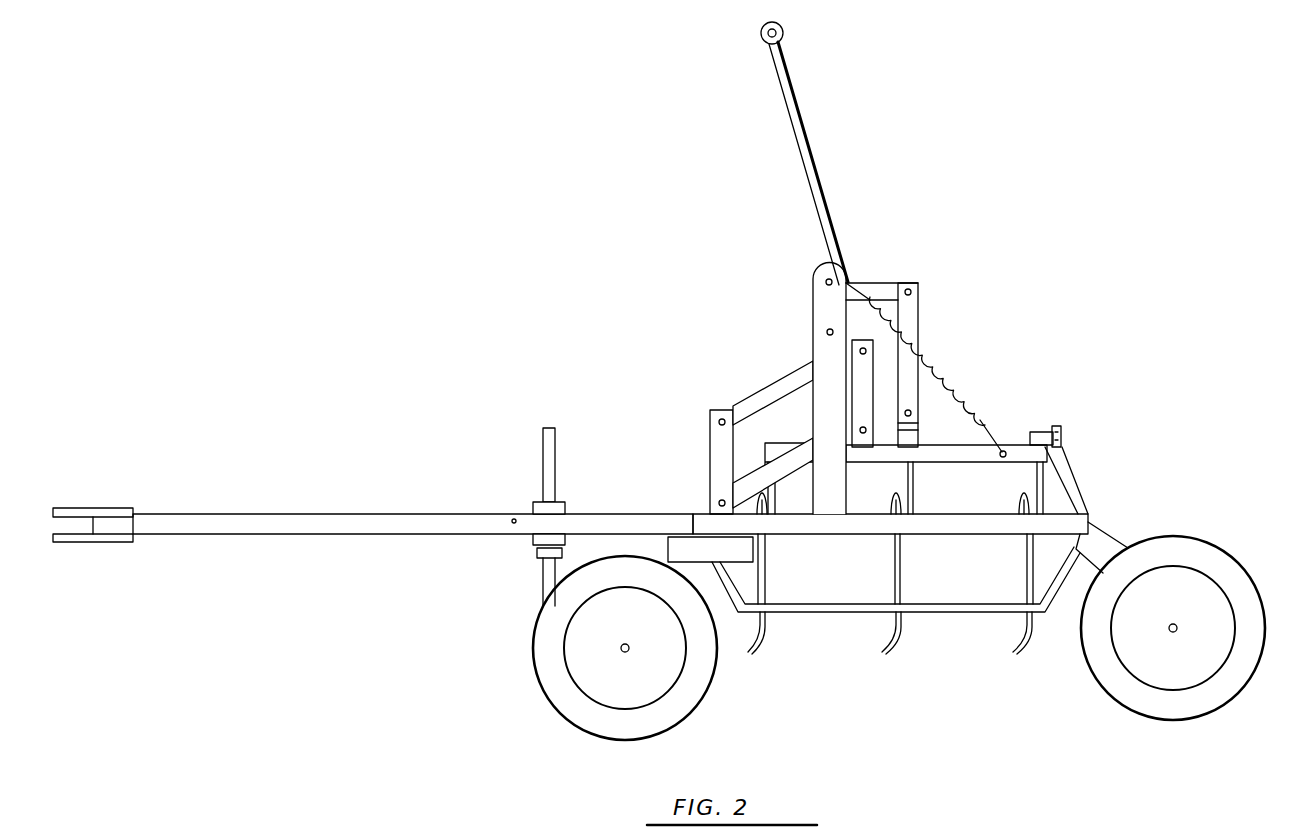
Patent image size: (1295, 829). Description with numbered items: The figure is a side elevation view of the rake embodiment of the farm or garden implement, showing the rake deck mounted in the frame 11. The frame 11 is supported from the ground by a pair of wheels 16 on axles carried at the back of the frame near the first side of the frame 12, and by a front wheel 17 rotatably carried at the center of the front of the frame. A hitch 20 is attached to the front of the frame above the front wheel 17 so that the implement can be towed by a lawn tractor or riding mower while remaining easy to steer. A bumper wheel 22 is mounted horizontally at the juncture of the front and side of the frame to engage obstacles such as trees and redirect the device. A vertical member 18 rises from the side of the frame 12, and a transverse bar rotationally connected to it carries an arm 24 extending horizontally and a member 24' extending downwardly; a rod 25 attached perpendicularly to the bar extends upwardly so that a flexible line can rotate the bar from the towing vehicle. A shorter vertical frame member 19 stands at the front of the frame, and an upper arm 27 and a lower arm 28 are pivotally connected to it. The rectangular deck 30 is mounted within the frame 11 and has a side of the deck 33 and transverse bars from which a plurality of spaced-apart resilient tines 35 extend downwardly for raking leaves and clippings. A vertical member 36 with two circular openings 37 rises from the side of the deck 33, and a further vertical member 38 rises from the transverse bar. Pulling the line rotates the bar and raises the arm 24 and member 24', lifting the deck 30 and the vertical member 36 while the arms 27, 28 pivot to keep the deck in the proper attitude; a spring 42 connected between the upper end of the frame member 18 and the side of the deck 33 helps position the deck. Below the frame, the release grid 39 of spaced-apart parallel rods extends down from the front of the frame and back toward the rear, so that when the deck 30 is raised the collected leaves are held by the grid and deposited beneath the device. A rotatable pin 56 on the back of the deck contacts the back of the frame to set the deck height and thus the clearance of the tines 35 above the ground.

The frame 11 is at (1100, 488).
The first side of the frame 12 is at (807, 523).
The wheels 16 is at (1232, 690).
The front wheel 17 is at (558, 700).
The vertical member 18 is at (828, 305).
The vertical frame member 19 is at (710, 420).
The hitch 20 is at (318, 525).
The bumper wheel 22 is at (688, 545).
The arm 24 is at (882, 263).
The member 24' is at (933, 348).
The rod 25 is at (807, 153).
The upper arm 27 is at (788, 383).
The lower arm 28 is at (750, 485).
The deck 30 is at (1017, 432).
The side of the deck 33 is at (970, 452).
The resilient tines 35 is at (747, 652).
The vertical member 36 is at (863, 383).
The circular openings 37 is at (864, 349).
The vertical member 38 is at (912, 432).
The release grid 39 is at (983, 612).
The spring 42 is at (948, 377).
The rotatable pin 56 is at (1060, 428).